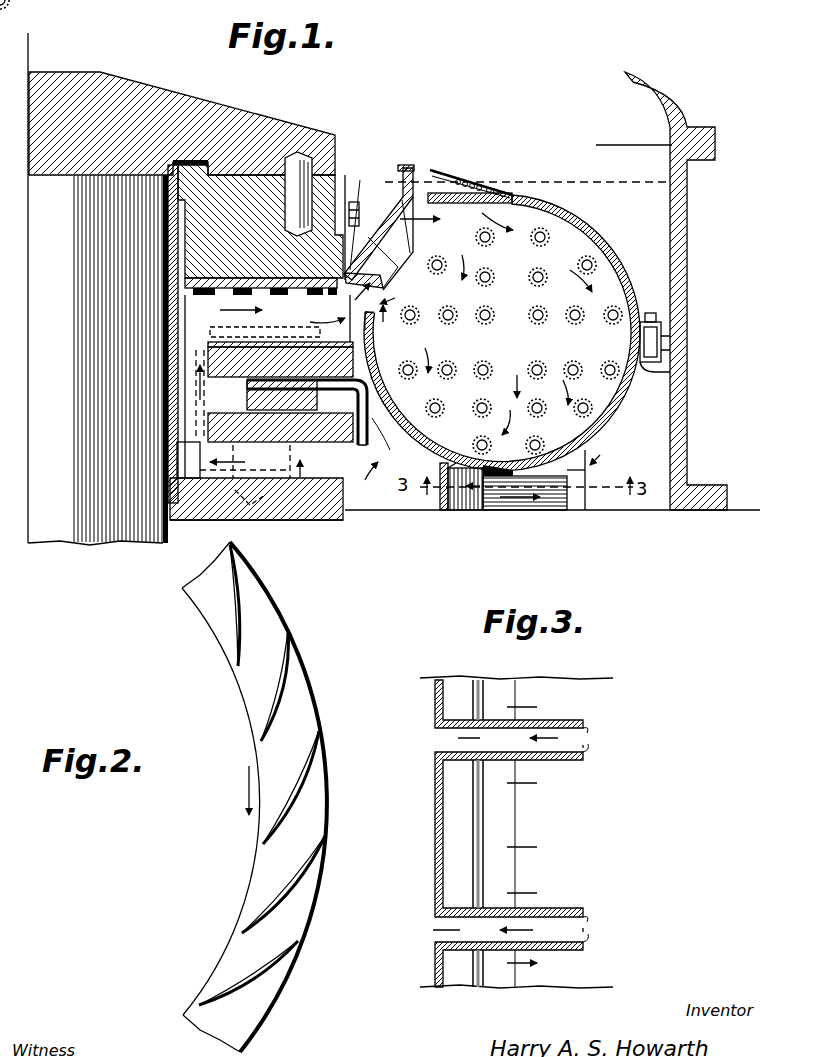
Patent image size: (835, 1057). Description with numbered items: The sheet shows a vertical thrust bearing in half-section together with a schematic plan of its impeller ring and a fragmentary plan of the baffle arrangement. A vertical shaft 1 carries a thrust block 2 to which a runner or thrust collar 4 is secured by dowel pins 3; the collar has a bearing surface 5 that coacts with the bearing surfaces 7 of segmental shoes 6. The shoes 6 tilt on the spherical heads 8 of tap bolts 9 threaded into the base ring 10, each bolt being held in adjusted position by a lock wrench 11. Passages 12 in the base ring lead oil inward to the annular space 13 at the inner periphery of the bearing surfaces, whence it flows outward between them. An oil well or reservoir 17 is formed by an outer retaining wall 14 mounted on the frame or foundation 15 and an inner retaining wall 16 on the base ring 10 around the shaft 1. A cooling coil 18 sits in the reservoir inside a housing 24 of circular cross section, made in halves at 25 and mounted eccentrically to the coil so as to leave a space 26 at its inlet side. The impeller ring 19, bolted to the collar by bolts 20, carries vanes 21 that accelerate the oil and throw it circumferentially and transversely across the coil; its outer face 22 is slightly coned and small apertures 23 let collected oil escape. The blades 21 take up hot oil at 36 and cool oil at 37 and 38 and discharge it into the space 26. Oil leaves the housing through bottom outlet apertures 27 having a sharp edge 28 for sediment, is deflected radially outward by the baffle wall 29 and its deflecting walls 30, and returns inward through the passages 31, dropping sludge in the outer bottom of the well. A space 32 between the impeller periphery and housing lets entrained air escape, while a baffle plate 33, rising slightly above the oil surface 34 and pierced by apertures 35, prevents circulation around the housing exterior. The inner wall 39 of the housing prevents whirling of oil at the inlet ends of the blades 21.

In FIG. 1, the vertical shaft 1 is at (72, 535).
In FIG. 1, the thrust block 2 is at (200, 112).
In FIG. 1, the dowel pins 3 is at (297, 157).
In FIG. 1, the runner or thrust collar 4 is at (190, 225).
In FIG. 1, the bearing surface 5 is at (172, 267).
In FIG. 1, the segmental bearing portions or shoes 6 is at (200, 312).
In FIG. 1, the bearing surfaces 7 is at (190, 286).
In FIG. 1, the spherical heads 8 is at (266, 393).
In FIG. 1, the tap bolts 9 is at (233, 423).
In FIG. 1, the base ring 10 is at (328, 520).
In FIG. 1, the lock wrench 11 is at (318, 462).
In FIG. 1, the passages 12 is at (282, 520).
In FIG. 1, the annular space 13 is at (210, 344).
In FIG. 1, the outer retaining wall 14 is at (662, 331).
In FIG. 1, the frame or foundation 15 is at (441, 500).
In FIG. 1, the inner retaining wall 16 is at (163, 197).
In FIG. 1, the oil well or reservoir 17 is at (662, 230).
In FIG. 1, the cooling coil 18 is at (587, 263).
In FIG. 1, the impeller ring 19 is at (380, 237).
In FIG. 2, the impeller ring 19 is at (317, 790).
In FIG. 1, the bolts 20 is at (353, 207).
In FIG. 1, the vanes 21 is at (362, 280).
In FIG. 2, the vanes 21 is at (306, 731).
In FIG. 1, the coned outer face 22 is at (402, 166).
In FIG. 1, the small apertures 23 is at (417, 200).
In FIG. 1, the housing 24 is at (543, 200).
In FIG. 1, the housing halves 25 is at (661, 317).
In FIG. 1, the space 26 is at (449, 219).
In FIG. 1, the outlet apertures 27 is at (520, 478).
In FIG. 3, the outlet apertures 27 is at (500, 690).
In FIG. 1, the sharp edge 28 is at (483, 488).
In FIG. 1, the baffle wall 29 is at (468, 500).
In FIG. 1, the deflecting walls 30 is at (572, 500).
In FIG. 3, the deflecting walls 30 is at (583, 748).
In FIG. 3, the inlet passages 31 is at (520, 923).
In FIG. 1, the space 32 is at (431, 170).
In FIG. 1, the baffle plate 33 is at (438, 168).
In FIG. 1, the oil surface 34 is at (613, 182).
In FIG. 1, the apertures 35 is at (473, 192).
In FIG. 1, the hot oil take-up point 36 is at (357, 293).
In FIG. 1, the exterior cool oil take-up point 37 is at (378, 340).
In FIG. 1, the interior cool oil take-up point 38 is at (396, 298).
In FIG. 1, the inner wall of housing 39 is at (392, 420).